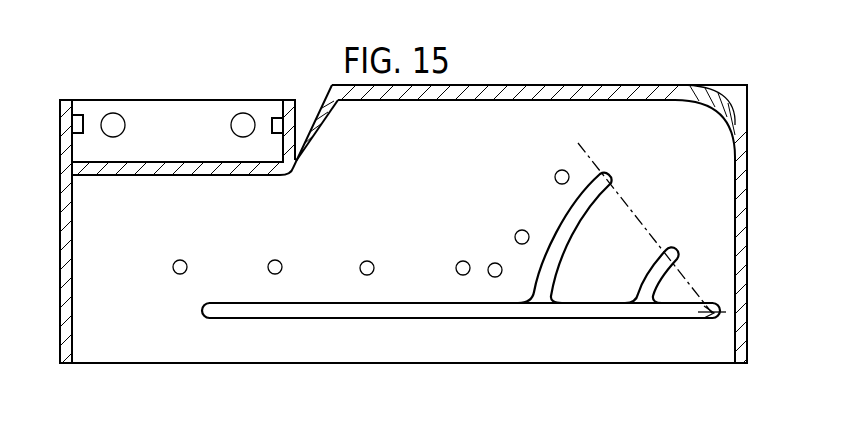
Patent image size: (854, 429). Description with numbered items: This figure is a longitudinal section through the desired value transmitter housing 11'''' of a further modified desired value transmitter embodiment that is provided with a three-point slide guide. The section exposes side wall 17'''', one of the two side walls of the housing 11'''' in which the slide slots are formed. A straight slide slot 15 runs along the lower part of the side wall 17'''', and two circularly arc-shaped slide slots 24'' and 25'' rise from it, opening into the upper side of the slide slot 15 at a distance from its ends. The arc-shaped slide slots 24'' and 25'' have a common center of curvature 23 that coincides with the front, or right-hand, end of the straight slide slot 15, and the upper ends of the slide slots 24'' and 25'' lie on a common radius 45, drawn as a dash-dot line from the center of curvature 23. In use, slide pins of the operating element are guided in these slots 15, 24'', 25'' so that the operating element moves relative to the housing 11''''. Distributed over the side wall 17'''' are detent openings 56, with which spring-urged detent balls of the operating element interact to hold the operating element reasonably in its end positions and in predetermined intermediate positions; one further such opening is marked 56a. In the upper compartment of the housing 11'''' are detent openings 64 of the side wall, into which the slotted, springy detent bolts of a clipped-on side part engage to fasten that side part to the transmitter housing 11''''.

The desired value transmitter housing 11'''' is at (403, 183).
The side wall 17'''' is at (502, 78).
The detent openings 64 is at (238, 122).
The detent openings 56 is at (555, 177).
The aperture 56a is at (498, 277).
The slide slot 15 is at (305, 312).
The slide slot 24'' is at (564, 293).
The slide slot 25'' is at (659, 330).
The common center of curvature 23 is at (712, 319).
The common radius 45 is at (640, 212).